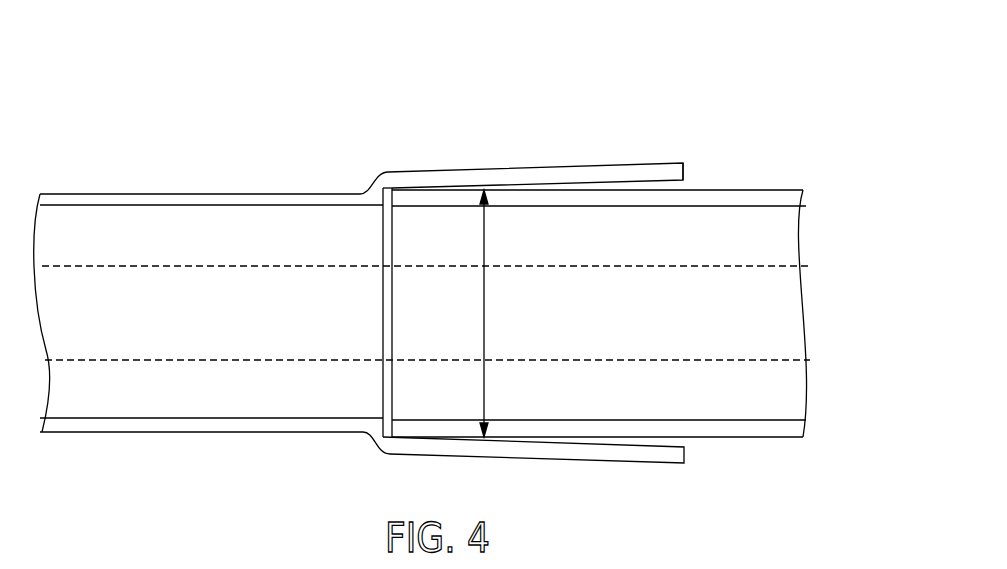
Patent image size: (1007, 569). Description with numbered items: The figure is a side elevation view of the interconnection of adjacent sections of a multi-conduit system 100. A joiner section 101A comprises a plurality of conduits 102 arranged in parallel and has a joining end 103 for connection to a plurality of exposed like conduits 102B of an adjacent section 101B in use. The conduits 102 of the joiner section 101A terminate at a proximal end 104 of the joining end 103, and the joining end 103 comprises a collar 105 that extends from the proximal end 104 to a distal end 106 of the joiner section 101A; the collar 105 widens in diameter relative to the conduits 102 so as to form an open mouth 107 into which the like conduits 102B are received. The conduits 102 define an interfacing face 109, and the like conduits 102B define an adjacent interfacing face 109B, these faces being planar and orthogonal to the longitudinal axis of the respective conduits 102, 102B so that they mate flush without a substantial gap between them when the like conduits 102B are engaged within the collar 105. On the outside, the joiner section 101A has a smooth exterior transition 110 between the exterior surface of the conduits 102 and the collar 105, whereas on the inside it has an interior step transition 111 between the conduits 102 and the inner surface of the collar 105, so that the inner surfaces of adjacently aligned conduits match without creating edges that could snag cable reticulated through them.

The multi-conduit system 100 is at (748, 87).
The joiner section 101A is at (121, 150).
The adjacent section 101B is at (759, 156).
The conduits 102 is at (192, 228).
The like conduits 102B is at (577, 228).
The joining end 103 is at (713, 73).
The proximal end 104 is at (389, 165).
The collar 105 is at (513, 178).
The distal end 106 is at (683, 158).
The open mouth 107 is at (485, 318).
The interfacing face 109 is at (383, 312).
The adjacent interfacing face 109B is at (392, 282).
The smooth exterior transition 110 is at (380, 181).
The interior step transition 111 is at (390, 192).